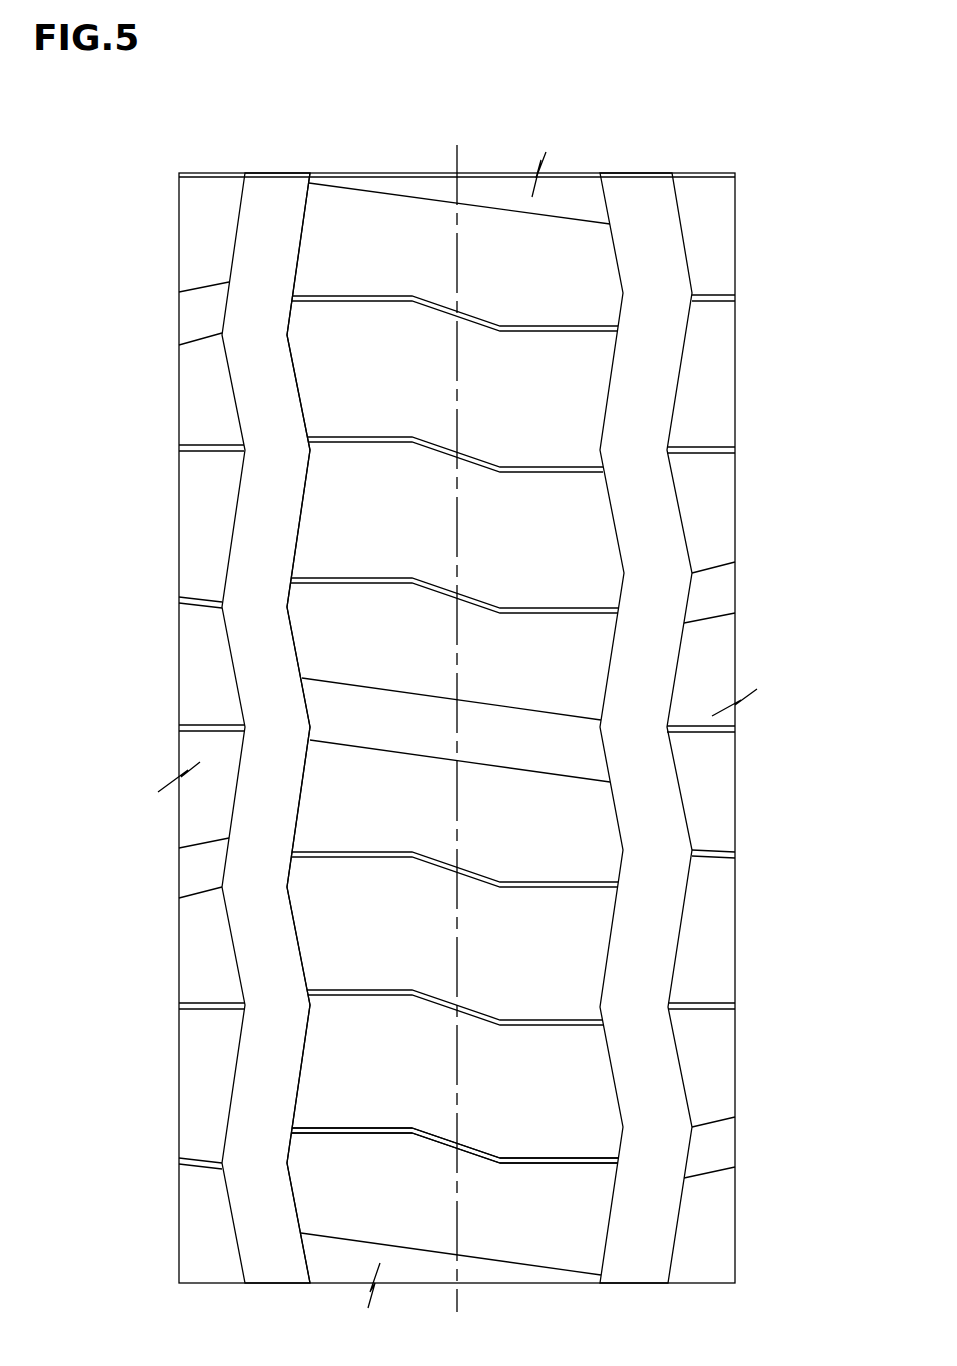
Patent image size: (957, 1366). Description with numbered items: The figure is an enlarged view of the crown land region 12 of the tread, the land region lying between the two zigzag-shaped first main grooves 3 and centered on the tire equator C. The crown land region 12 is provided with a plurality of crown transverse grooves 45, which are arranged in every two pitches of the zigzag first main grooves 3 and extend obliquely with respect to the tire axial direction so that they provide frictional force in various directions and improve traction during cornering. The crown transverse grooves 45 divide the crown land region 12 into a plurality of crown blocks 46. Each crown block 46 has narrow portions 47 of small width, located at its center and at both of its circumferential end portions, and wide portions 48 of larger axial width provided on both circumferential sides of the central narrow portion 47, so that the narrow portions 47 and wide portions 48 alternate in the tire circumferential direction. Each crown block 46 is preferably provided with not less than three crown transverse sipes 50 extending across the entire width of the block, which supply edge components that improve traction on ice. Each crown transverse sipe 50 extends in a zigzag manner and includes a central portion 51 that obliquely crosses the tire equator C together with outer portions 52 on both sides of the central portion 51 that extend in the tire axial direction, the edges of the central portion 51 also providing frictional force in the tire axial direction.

The first main groove 3 is at (264, 232).
The crown land region 12 is at (383, 242).
The tire equator C is at (457, 713).
The crown transverse groove 45 is at (482, 733).
The crown block 46 is at (293, 375).
The narrow portion 47 is at (467, 438).
The wide portion 48 is at (467, 300).
The crown transverse sipe 50 is at (437, 447).
The central portion 51 is at (480, 1152).
The outer portion 52 is at (352, 1128).